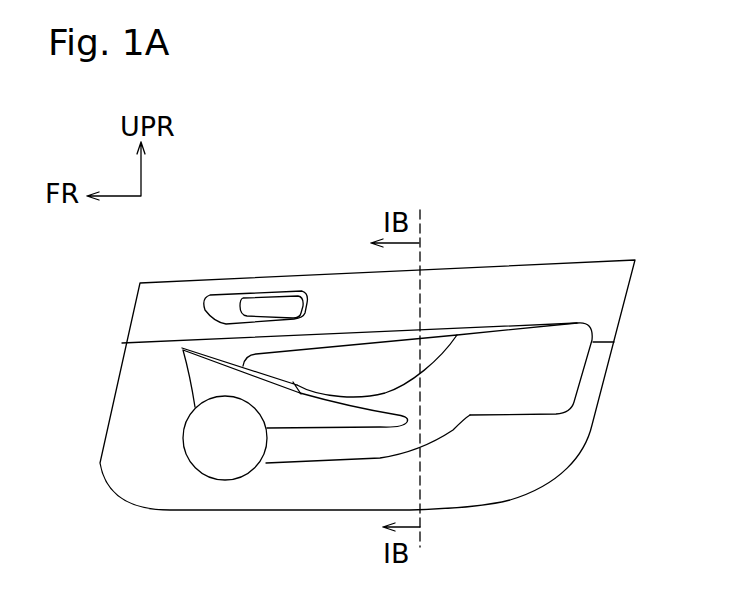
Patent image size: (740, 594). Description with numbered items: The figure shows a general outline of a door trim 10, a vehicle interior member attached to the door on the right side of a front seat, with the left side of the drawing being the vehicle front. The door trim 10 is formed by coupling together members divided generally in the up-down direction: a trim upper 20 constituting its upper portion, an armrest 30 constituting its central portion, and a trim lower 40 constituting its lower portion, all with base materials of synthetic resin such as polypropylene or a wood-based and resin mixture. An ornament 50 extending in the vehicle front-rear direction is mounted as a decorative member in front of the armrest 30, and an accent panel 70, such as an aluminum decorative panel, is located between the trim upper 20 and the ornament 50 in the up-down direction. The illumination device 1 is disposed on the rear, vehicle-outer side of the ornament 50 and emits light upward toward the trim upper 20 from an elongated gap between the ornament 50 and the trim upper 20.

The illumination device 1 is at (365, 327).
The door trim 10 is at (92, 501).
The trim upper 20 is at (543, 290).
The armrest 30 is at (527, 375).
The trim lower 40 is at (503, 457).
The ornament 50 is at (328, 367).
The accent panel 70 is at (237, 352).